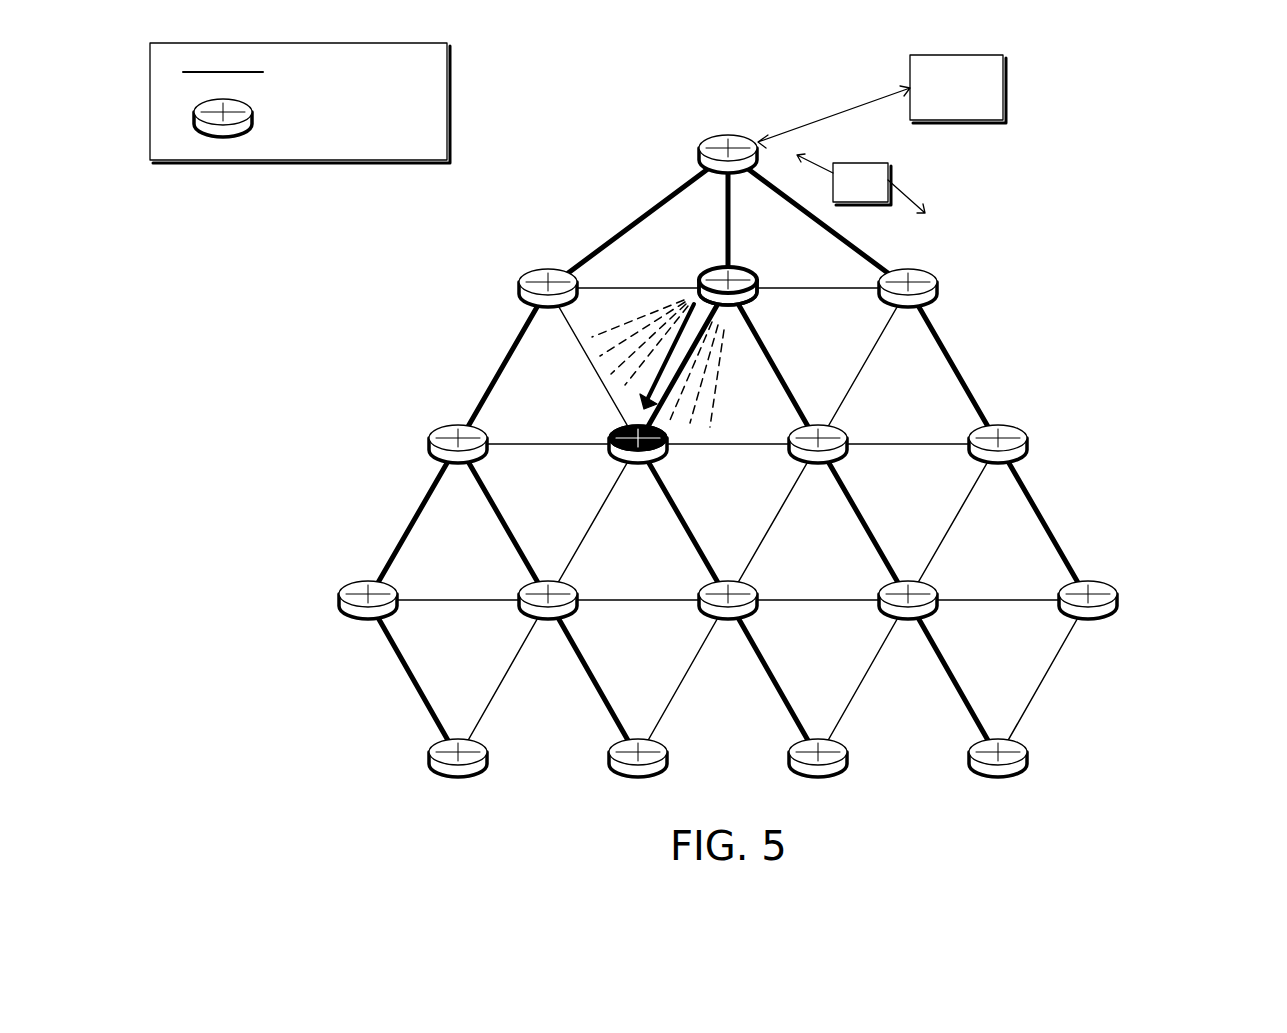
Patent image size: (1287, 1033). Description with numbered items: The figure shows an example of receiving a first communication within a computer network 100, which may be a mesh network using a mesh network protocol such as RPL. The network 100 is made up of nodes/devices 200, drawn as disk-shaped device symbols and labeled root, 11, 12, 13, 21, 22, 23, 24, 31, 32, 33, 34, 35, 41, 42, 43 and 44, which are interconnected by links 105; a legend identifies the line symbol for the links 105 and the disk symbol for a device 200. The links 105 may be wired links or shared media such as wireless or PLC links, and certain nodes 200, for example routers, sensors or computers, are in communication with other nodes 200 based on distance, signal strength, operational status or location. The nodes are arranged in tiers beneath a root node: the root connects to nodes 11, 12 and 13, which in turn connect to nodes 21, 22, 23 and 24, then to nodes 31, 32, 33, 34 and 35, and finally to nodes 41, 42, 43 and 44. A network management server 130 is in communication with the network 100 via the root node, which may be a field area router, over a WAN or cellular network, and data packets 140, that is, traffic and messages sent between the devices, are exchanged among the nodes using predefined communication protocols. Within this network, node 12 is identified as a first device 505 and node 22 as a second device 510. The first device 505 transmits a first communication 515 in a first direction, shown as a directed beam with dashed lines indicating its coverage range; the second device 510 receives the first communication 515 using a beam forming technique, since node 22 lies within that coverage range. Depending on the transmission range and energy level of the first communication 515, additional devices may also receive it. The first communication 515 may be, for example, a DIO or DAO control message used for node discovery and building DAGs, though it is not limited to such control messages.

The computer network 100 is at (1217, 98).
The links 105 is at (635, 409).
The network management server 130 is at (941, 109).
The data packets 140 is at (846, 196).
The nodes/devices 200 is at (297, 118).
The first device 505 is at (760, 265).
The second device 510 is at (678, 459).
The first communication 515 is at (642, 352).
The node 11 is at (548, 306).
The node 12 is at (728, 305).
The node 13 is at (908, 306).
The node 21 is at (458, 462).
The node 22 is at (638, 461).
The node 23 is at (818, 462).
The node 24 is at (998, 462).
The node 31 is at (368, 618).
The node 32 is at (548, 618).
The node 33 is at (728, 618).
The node 34 is at (908, 618).
The node 35 is at (1088, 618).
The node 41 is at (458, 776).
The node 42 is at (638, 776).
The node 43 is at (818, 776).
The node 44 is at (998, 776).